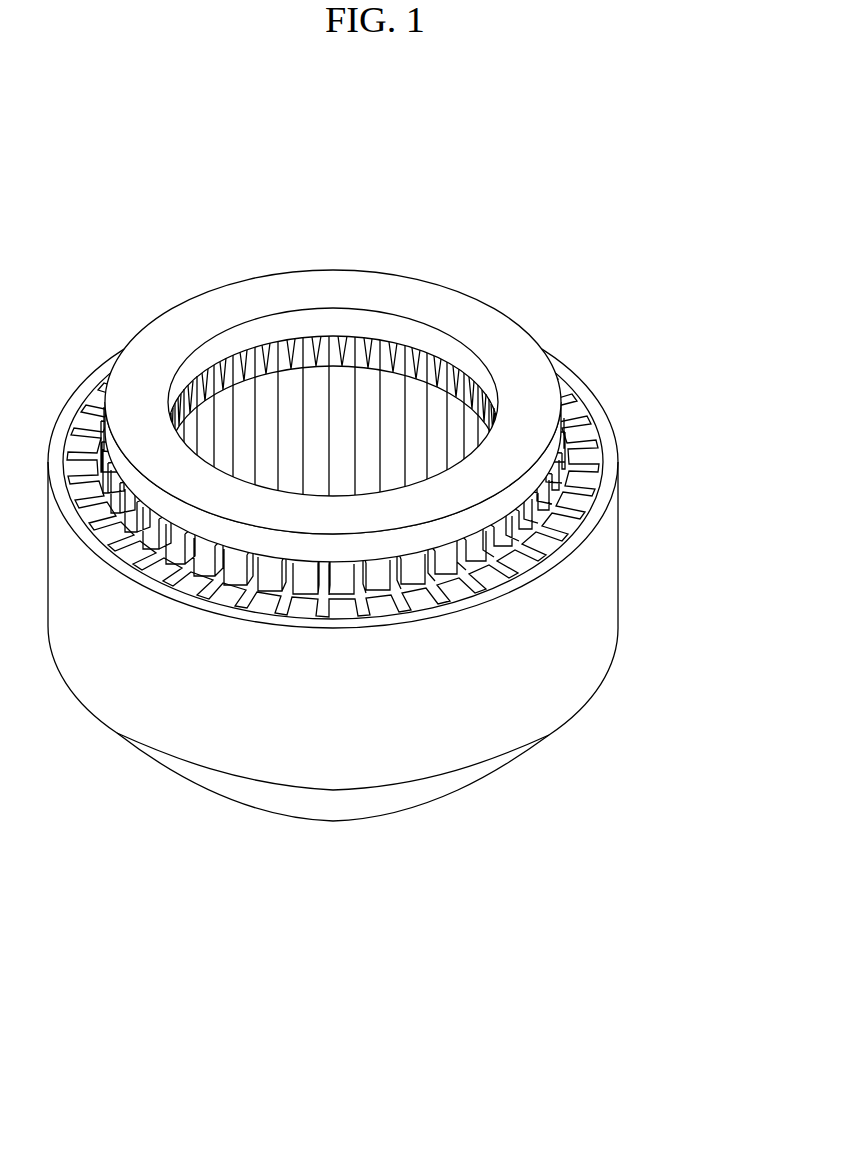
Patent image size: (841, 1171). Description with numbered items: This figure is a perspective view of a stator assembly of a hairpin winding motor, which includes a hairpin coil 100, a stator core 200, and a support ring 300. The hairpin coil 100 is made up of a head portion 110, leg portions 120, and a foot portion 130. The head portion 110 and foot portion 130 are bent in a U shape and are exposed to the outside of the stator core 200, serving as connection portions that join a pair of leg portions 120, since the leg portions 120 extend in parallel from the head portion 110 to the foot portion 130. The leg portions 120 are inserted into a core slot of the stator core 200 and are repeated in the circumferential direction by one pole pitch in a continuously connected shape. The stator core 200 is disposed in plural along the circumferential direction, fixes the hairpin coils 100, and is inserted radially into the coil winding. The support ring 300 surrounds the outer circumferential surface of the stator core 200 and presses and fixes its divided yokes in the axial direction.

The hairpin coil 100 is at (333, 344).
The head portion 110 is at (183, 290).
The leg portions 120 is at (272, 357).
The foot portion 130 is at (373, 806).
The stator core 200 is at (438, 413).
The support ring 300 is at (597, 694).